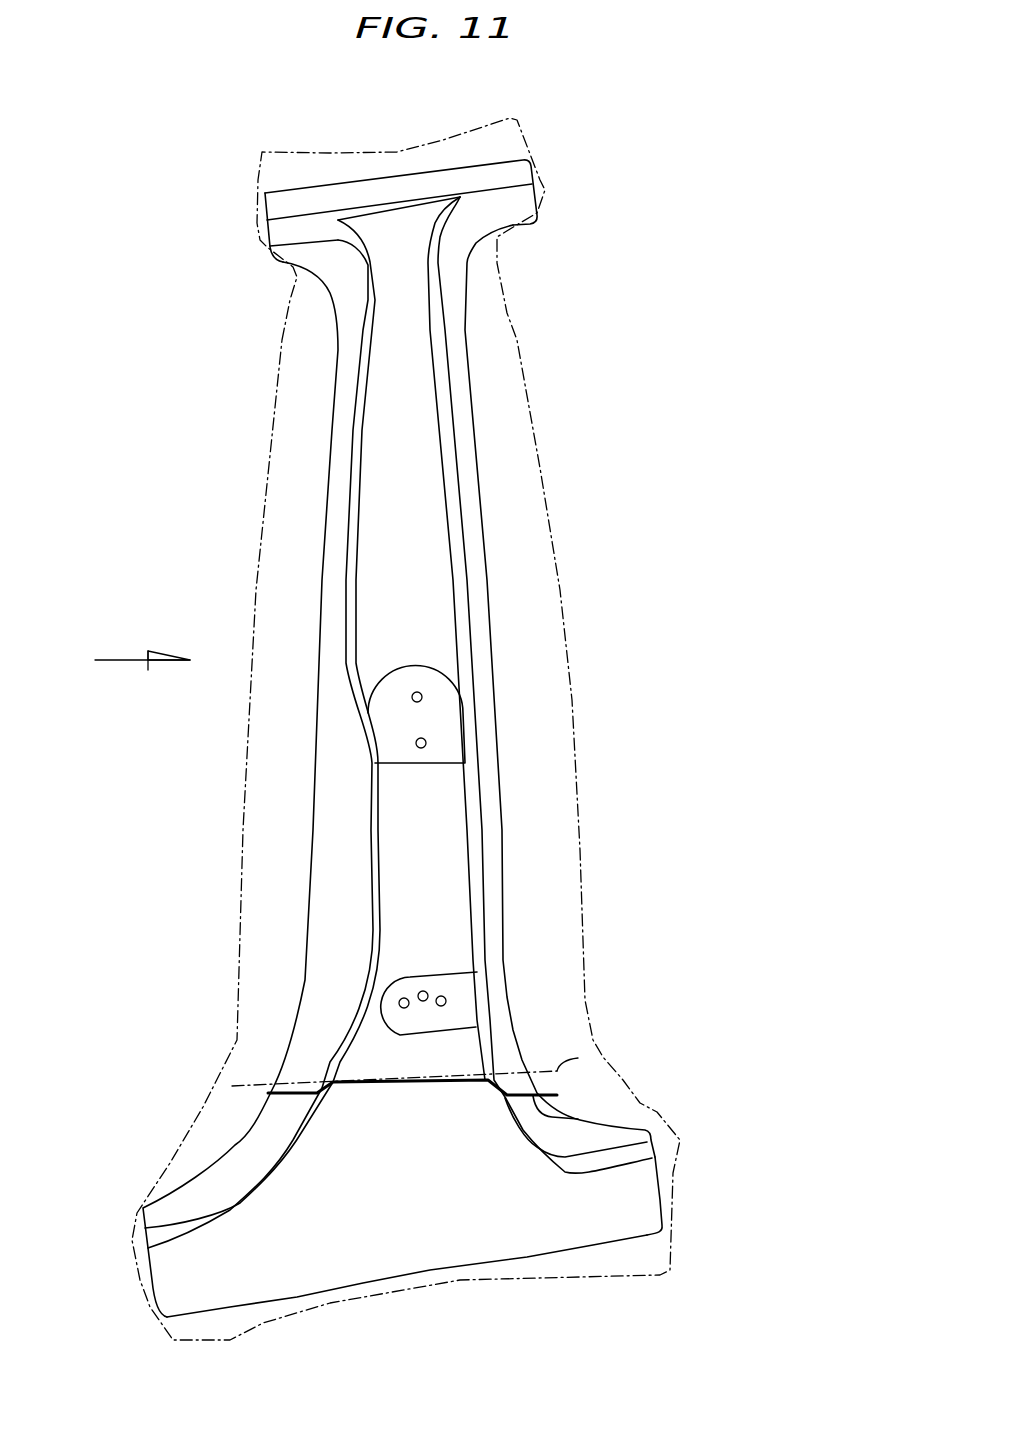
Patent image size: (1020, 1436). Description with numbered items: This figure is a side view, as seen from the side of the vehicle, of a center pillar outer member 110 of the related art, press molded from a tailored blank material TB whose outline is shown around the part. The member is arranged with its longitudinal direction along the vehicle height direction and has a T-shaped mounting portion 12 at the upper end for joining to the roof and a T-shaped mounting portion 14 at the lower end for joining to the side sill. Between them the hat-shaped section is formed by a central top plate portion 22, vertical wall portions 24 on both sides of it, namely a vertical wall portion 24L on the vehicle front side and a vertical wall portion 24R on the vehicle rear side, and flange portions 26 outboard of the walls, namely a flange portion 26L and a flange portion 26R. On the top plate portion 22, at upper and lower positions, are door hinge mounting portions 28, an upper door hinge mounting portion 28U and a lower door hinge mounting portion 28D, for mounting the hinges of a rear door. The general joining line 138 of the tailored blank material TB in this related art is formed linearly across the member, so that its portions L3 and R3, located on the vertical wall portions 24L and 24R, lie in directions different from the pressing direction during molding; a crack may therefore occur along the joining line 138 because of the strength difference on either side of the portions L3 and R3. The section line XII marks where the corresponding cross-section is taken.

The center pillar outer member 110 is at (477, 477).
The mounting portion 12 is at (368, 190).
The mounting portion 14 is at (380, 1248).
The top plate portion 22 is at (420, 848).
The vertical wall portions 24 is at (412, 722).
The vertical wall portion 24L is at (360, 395).
The vertical wall portion 24R is at (438, 355).
The flange portions 26 is at (440, 789).
The flange portion 26L is at (342, 272).
The flange portion 26R is at (603, 1135).
The door hinge mounting portions 28 is at (545, 850).
The door hinge mounting portion 28U is at (440, 718).
The door hinge mounting portion 28D is at (458, 993).
The joining line 138 is at (557, 1117).
The portion of the joining line L3 is at (320, 1080).
The portion of the joining line R3 is at (503, 1073).
The tailored blank material TB is at (563, 594).
The section line XII is at (123, 662).